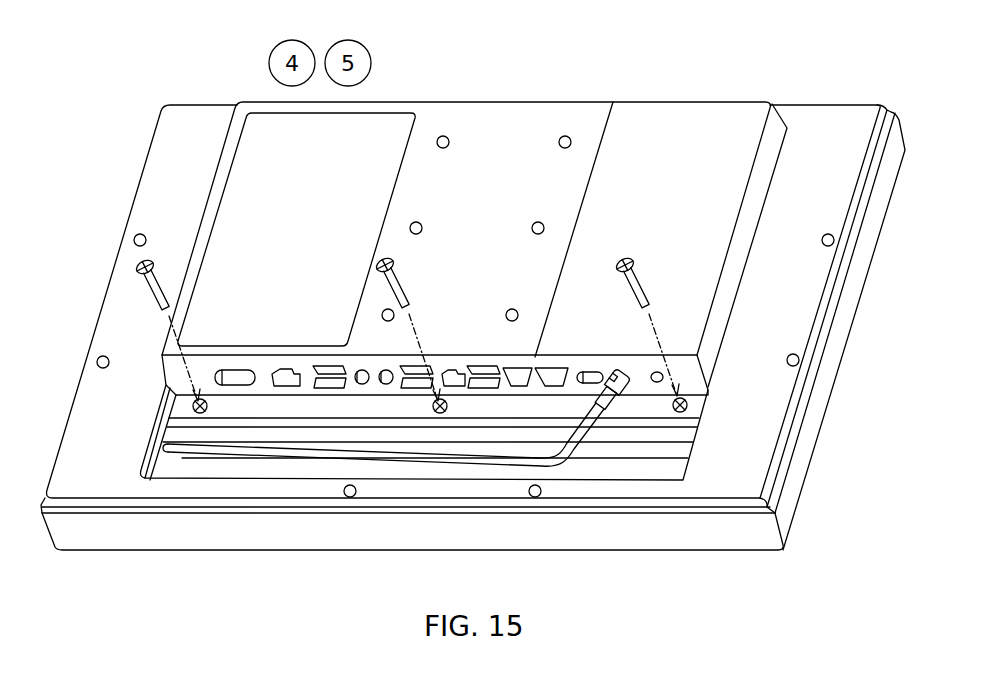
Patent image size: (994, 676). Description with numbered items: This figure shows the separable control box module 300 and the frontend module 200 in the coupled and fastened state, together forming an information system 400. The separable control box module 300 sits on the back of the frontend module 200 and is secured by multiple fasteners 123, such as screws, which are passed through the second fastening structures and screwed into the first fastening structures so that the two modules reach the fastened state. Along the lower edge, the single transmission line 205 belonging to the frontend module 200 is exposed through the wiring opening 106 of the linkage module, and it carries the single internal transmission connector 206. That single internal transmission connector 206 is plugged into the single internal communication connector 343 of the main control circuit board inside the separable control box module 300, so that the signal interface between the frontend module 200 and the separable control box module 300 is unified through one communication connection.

The frontend module 200 is at (815, 95).
The information system 400 is at (852, 544).
The separable control box module 300 is at (616, 95).
The single internal communication connector 343 is at (627, 392).
The fasteners 123 is at (642, 283).
The single transmission line 205 is at (513, 467).
The wiring opening 106 is at (163, 447).
The single internal transmission connector 206 is at (612, 370).